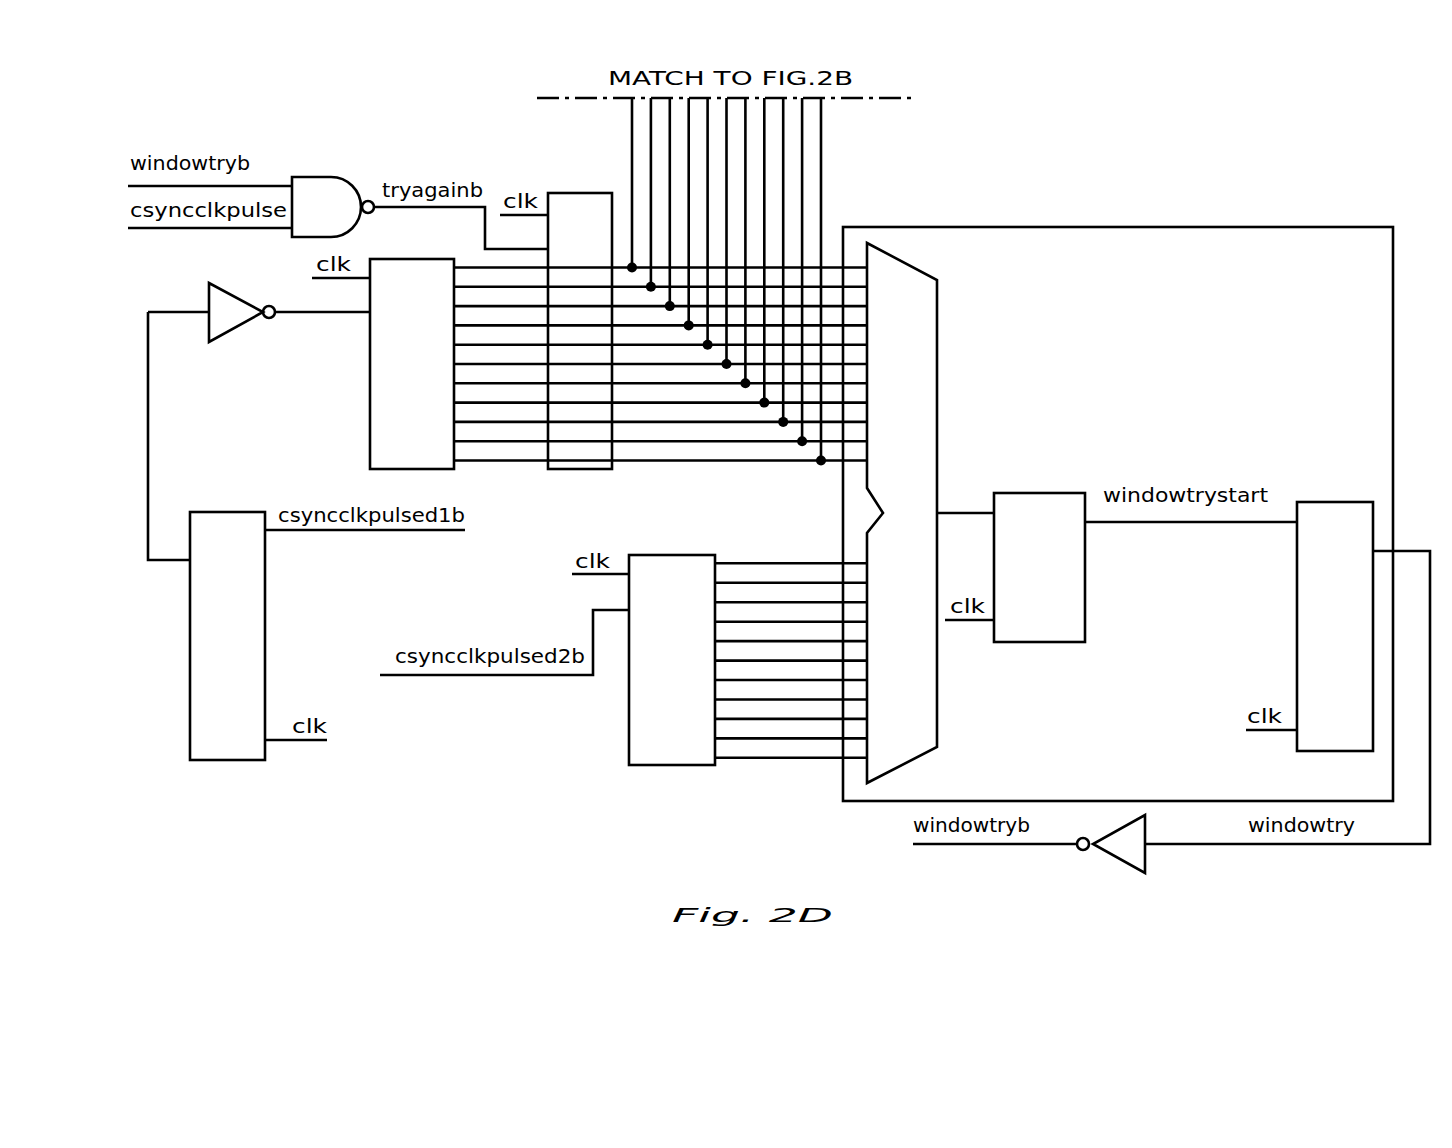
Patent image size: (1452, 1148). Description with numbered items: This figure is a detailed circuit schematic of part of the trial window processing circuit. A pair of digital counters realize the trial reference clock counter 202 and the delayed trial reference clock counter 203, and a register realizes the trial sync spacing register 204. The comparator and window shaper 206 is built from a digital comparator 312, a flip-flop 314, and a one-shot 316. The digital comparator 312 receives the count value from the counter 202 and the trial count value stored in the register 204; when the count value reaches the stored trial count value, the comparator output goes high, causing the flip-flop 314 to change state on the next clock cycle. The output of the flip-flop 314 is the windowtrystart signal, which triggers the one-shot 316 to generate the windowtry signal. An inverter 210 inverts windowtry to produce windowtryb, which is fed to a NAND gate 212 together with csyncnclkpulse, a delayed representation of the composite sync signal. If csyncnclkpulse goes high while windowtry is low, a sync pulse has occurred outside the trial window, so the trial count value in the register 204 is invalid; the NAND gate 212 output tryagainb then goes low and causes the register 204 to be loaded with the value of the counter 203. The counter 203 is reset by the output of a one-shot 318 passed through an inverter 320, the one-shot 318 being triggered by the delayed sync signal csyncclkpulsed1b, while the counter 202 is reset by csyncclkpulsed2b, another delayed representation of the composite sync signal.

The trial reference clock counter 202 is at (627, 713).
The delayed trial reference clock counter 203 is at (370, 425).
The trial sync spacing register 204 is at (588, 469).
The comparator and window shaper 206 is at (1152, 227).
The inverter 210 is at (1110, 830).
The NAND gate 212 is at (316, 177).
The digital comparator 312 is at (937, 350).
The flip-flop 314 is at (1045, 493).
The one-shot 316 is at (1338, 502).
The one-shot 318 is at (215, 760).
The inverter 320 is at (235, 332).